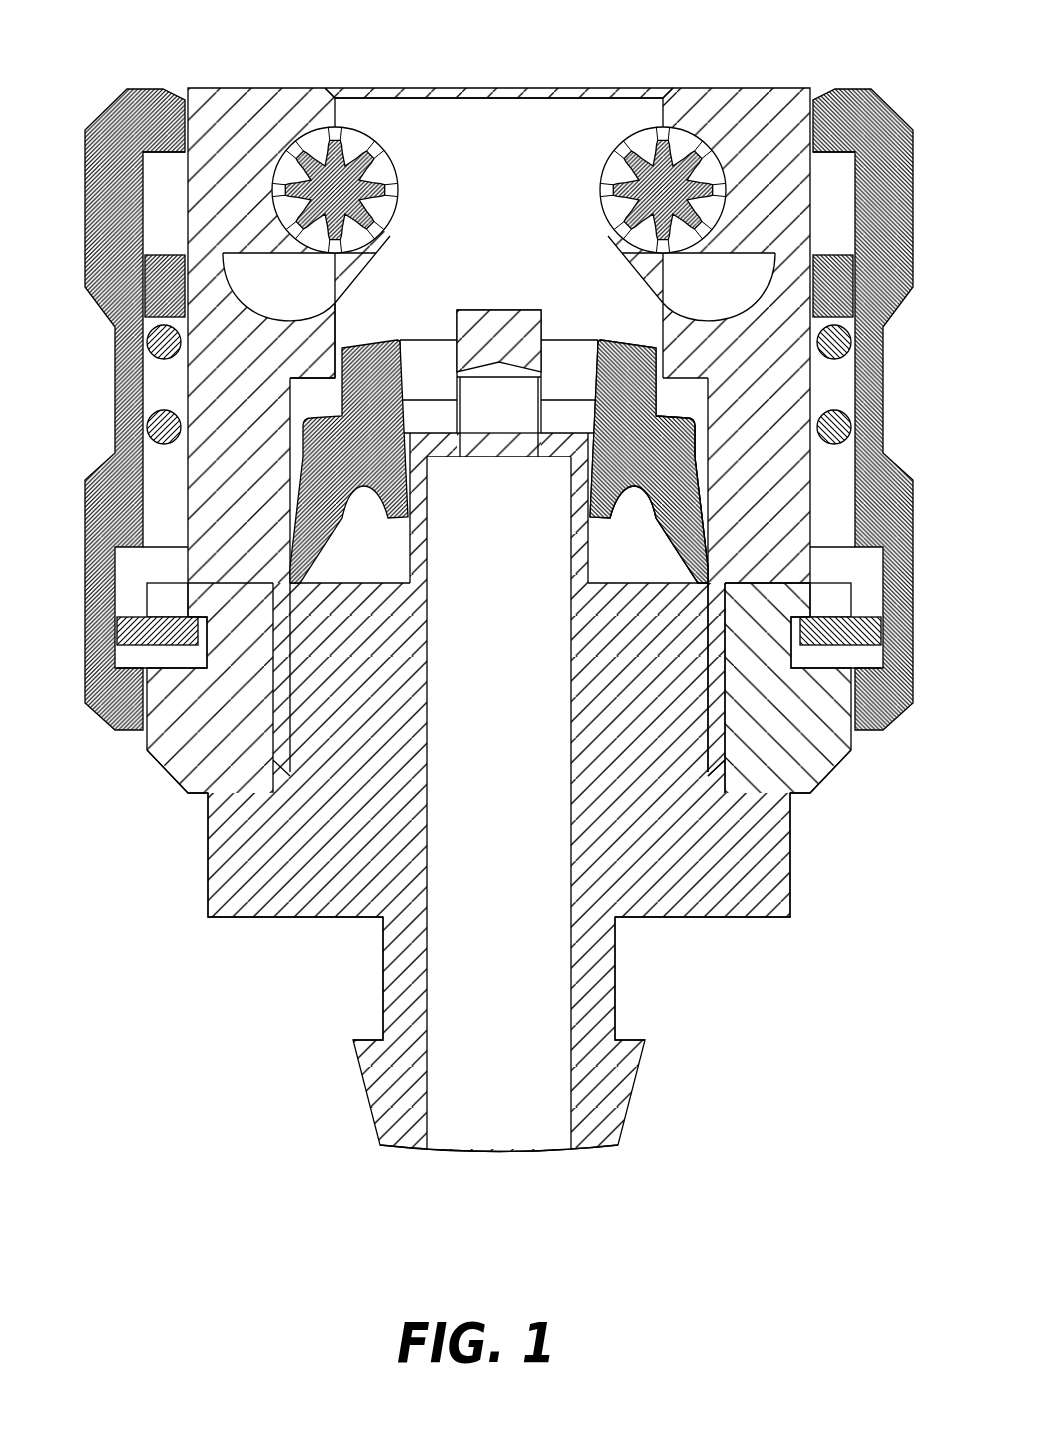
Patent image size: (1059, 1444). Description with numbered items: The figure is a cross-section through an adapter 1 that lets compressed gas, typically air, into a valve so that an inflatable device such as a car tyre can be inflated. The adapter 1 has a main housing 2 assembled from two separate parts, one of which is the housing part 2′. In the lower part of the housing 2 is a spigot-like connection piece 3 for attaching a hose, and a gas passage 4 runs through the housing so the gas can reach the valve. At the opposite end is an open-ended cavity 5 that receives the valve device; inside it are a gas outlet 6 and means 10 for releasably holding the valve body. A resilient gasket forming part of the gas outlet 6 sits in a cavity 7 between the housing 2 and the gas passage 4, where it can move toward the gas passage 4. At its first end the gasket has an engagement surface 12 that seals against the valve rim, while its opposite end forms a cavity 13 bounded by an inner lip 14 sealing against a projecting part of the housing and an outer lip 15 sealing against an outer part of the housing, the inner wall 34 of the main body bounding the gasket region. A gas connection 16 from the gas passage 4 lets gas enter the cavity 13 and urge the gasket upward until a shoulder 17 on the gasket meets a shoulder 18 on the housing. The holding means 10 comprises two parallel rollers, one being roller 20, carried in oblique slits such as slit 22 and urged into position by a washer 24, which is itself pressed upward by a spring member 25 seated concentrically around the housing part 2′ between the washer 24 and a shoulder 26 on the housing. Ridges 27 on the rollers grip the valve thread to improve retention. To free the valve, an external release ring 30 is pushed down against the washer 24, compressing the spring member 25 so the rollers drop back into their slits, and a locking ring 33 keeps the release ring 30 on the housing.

The adapter 1 is at (48, 690).
The main housing 2 is at (157, 890).
The housing part 2′ is at (815, 760).
The connection piece 3 is at (667, 1117).
The gas passage 4 is at (465, 966).
The open-ended cavity 5 is at (495, 113).
The gas outlet 6 is at (496, 272).
The cavity 7 is at (308, 400).
The means for releasably holding the valve body 10 is at (258, 245).
The engagement surface 12 is at (633, 343).
The cavity 13 is at (637, 527).
The inner lip 14 is at (603, 493).
The outer lip 15 is at (650, 568).
The gas connection 16 is at (650, 572).
The shoulder 17 is at (325, 424).
The shoulder 18 is at (690, 343).
The roller 20 is at (737, 152).
The slit 22 is at (737, 228).
The washer 24 is at (118, 332).
The spring member 25 is at (262, 186).
The shoulder 26 is at (167, 585).
The ridges 27 is at (372, 125).
The release ring 30 is at (885, 178).
The locking ring 33 is at (157, 633).
The inner wall 34 is at (162, 157).